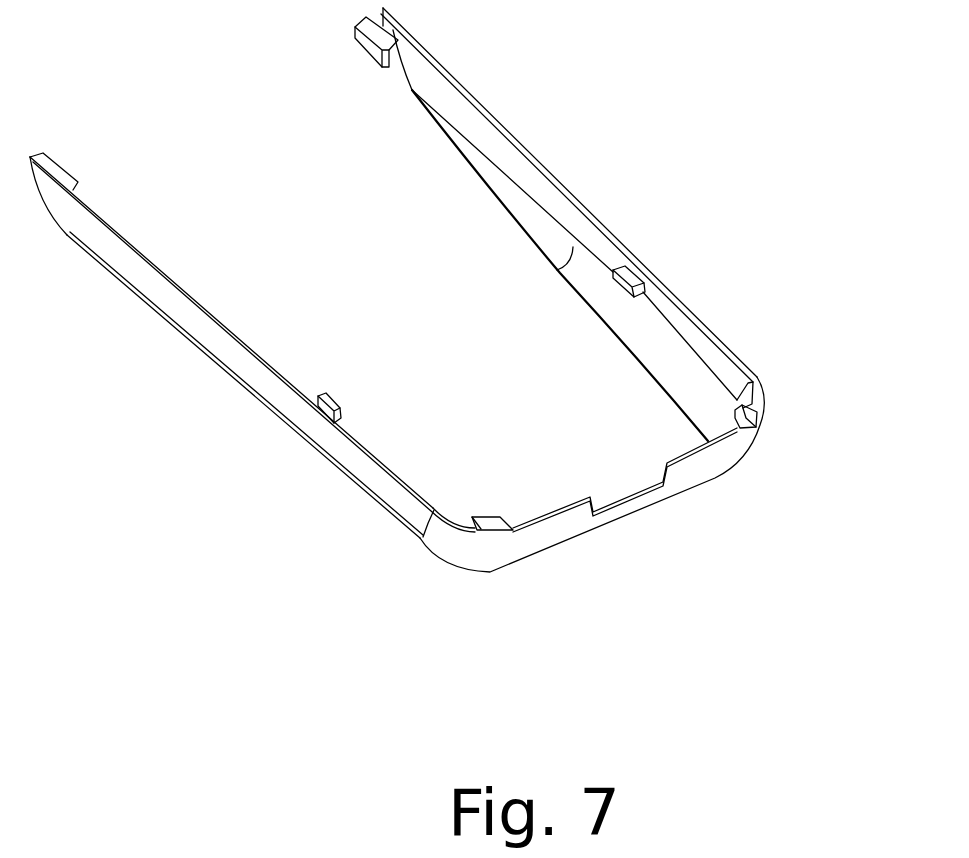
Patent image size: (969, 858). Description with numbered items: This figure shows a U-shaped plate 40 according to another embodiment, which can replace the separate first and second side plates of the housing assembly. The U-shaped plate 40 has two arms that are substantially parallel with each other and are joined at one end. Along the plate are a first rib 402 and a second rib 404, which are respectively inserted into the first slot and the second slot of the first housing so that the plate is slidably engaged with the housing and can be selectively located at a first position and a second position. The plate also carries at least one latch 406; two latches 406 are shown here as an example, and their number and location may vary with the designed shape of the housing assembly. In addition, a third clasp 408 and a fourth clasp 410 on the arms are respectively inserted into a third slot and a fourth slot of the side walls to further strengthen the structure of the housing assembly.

The U-shaped plate 40 is at (363, 470).
The first rib 402 is at (60, 178).
The second rib 404 is at (374, 44).
The latch 406 is at (490, 520).
The third clasp 408 is at (331, 401).
The fourth clasp 410 is at (613, 284).